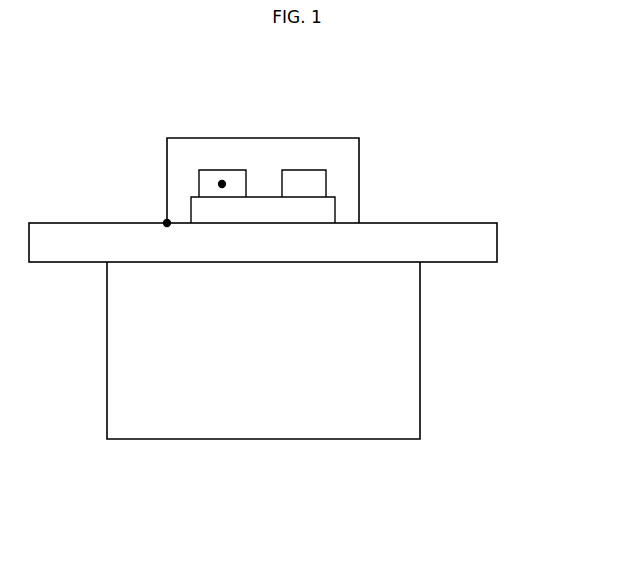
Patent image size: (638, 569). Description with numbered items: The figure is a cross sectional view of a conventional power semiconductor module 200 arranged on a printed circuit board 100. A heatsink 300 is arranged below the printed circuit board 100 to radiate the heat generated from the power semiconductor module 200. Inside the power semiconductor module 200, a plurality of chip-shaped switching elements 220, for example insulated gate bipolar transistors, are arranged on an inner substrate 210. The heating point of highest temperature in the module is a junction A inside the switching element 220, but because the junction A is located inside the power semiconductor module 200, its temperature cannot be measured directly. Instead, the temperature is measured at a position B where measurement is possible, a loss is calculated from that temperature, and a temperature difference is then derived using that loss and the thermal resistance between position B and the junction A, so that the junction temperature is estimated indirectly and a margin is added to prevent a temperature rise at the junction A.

The printed circuit board 100 is at (497, 237).
The power semiconductor module 200 is at (359, 178).
The inner substrate 210 is at (263, 197).
The switching element 220 is at (307, 170).
The heatsink 300 is at (420, 362).
The junction A is at (219, 184).
The temperature measurement position B is at (164, 222).